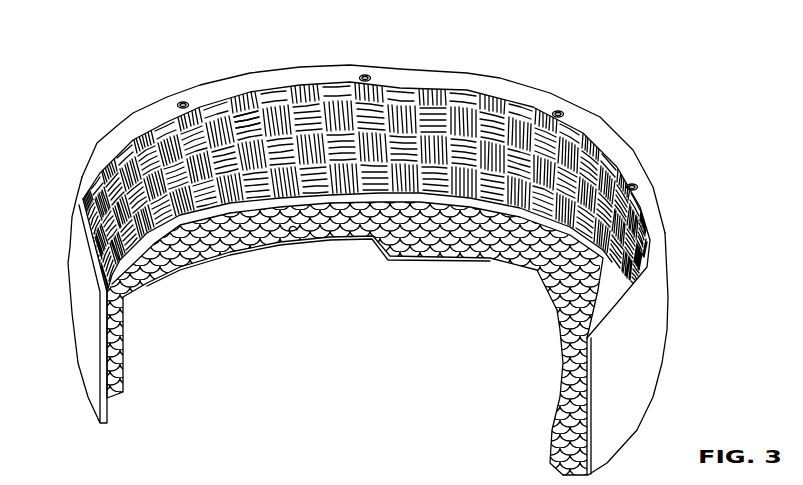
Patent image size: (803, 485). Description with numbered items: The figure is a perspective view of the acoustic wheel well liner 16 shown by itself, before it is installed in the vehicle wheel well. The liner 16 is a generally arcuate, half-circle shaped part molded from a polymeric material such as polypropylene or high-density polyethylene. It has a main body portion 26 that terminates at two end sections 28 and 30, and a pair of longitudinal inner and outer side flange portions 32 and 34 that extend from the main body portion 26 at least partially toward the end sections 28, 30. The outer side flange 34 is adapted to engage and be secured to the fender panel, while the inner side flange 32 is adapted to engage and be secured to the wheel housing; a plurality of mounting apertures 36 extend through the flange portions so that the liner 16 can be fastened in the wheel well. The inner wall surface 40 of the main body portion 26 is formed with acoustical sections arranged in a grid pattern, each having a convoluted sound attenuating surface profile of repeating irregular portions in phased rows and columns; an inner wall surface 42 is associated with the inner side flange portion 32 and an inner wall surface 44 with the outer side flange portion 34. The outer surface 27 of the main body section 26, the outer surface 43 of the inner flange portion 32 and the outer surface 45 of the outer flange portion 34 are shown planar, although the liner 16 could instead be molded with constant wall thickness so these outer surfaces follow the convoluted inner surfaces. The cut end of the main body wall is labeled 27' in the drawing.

The liner 16 is at (373, 254).
The main body portion 26 is at (373, 249).
The outer surface of main body section 27 is at (640, 354).
The outer shell wall cut end 27' is at (68, 300).
The end section 28 is at (110, 338).
The end section 30 is at (572, 433).
The inner side flange portion 32 is at (356, 339).
The outer side flange portion 34 is at (114, 140).
The mounting apertures 36 is at (367, 75).
The inner wall surface 40 is at (363, 170).
The inner wall surface 42 is at (293, 232).
The outer surface of inner flange portion 43 is at (206, 263).
The inner wall surface 44 is at (237, 107).
The outer surface of outer flange portion 45 is at (445, 77).